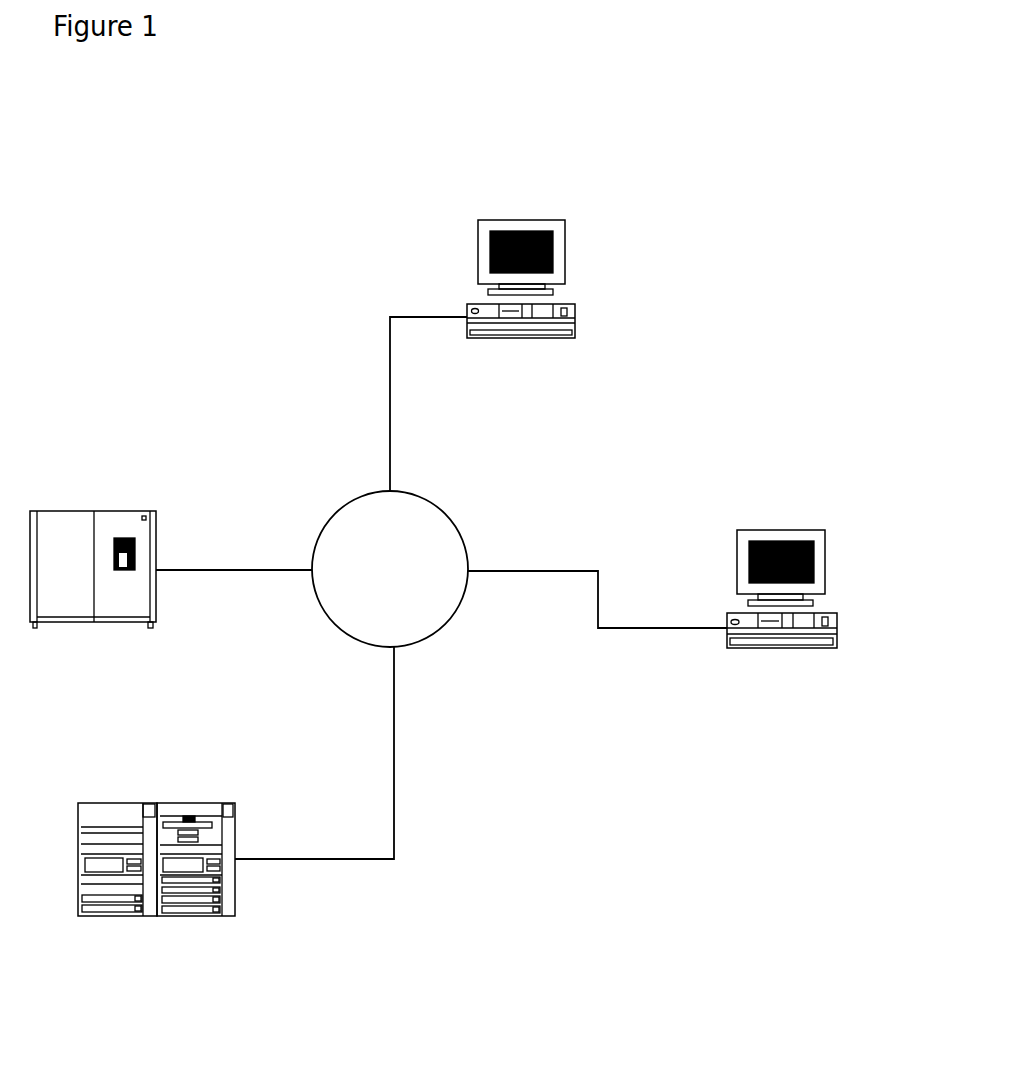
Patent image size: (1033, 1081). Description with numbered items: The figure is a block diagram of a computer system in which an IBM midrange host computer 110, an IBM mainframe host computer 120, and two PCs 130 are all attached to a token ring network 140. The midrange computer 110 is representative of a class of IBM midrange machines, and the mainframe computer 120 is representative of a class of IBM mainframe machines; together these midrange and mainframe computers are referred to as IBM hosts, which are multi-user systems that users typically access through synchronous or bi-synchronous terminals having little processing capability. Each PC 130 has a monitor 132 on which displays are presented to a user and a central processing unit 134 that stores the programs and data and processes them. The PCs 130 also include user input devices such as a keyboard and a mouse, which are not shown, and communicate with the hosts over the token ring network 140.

The IBM AS/400 110 is at (178, 830).
The IBM S/370 120 is at (148, 541).
The PC 130 is at (686, 424).
The monitor 132 is at (578, 257).
The central processing unit 134 is at (572, 312).
The token ring network 140 is at (439, 534).